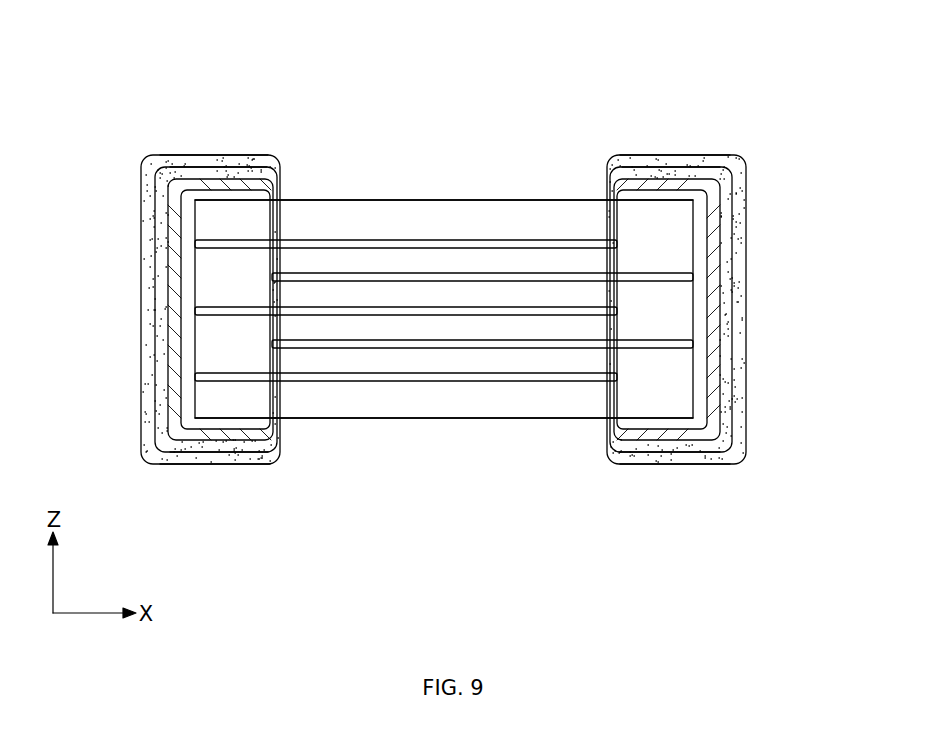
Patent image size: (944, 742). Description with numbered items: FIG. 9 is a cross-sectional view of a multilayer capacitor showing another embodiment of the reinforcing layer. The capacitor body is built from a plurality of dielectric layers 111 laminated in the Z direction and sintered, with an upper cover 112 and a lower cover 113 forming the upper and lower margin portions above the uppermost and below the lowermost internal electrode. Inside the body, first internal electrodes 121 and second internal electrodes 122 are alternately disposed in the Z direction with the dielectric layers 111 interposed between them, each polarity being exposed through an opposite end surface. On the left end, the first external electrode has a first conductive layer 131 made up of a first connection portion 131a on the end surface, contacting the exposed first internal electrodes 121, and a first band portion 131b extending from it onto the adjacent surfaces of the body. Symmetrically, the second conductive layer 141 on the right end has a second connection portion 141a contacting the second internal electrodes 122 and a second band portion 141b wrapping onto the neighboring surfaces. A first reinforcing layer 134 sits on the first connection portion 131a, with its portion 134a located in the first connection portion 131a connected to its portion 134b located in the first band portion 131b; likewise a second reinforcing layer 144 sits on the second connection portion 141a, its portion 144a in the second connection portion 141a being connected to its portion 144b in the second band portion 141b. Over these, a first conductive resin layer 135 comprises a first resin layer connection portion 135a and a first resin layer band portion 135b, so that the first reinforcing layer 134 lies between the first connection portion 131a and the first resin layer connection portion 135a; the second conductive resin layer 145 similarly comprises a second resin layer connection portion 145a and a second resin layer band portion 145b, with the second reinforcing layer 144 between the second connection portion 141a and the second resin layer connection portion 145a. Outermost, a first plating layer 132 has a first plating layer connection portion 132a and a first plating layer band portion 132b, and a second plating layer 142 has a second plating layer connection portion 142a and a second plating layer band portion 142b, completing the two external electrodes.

The dielectric layer 111 is at (632, 313).
The upper cover 112 is at (486, 217).
The lower cover 113 is at (464, 408).
The first internal electrode 121 is at (372, 243).
The second internal electrode 122 is at (557, 275).
The first conductive layer 131 is at (146, 309).
The first connection portion 131a is at (175, 340).
The first band portion 131b is at (193, 393).
The first plating layer 132 is at (146, 302).
The first plating layer connection portion 132a is at (170, 238).
The first plating layer band portion 132b is at (202, 158).
The first reinforcing layer 134 is at (190, 488).
The portion of first reinforcing layer disposed in first connection portion 134a is at (150, 418).
The portion of first reinforcing layer disposed in first band portion 134b is at (200, 398).
The first conductive resin layer 135 is at (232, 99).
The first resin layer connection portion 135a is at (230, 158).
The first resin layer band portion 135b is at (193, 70).
The second conductive layer 141 is at (742, 309).
The second connection portion 141a is at (720, 344).
The second band portion 141b is at (816, 345).
The second plating layer 142 is at (741, 302).
The second plating layer connection portion 142a is at (728, 229).
The second plating layer band portion 142b is at (700, 156).
The second reinforcing layer 144 is at (750, 463).
The portion of second reinforcing layer disposed in second connection portion 144a is at (735, 426).
The portion of second reinforcing layer disposed in second band portion 144b is at (652, 426).
The second conductive resin layer 145 is at (657, 96).
The second resin layer connection portion 145a is at (670, 157).
The second resin layer band portion 145b is at (695, 63).